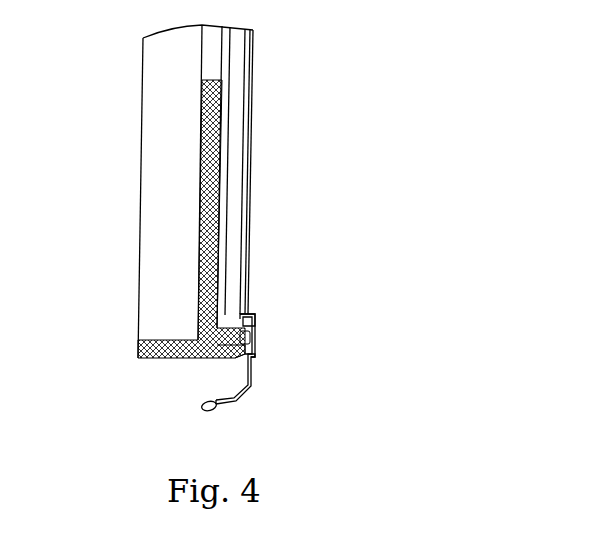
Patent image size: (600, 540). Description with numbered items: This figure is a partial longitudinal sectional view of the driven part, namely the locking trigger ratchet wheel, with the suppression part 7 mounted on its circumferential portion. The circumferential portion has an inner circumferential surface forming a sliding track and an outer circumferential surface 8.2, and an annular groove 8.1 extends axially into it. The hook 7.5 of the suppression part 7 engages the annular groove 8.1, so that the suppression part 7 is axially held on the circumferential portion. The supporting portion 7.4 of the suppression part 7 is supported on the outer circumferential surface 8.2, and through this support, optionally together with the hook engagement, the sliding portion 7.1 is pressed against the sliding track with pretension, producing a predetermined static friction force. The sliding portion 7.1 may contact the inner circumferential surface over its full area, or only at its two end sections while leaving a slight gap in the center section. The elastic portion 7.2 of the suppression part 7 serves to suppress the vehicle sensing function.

The suppression part 7 is at (256, 330).
The sliding portion 7.1 is at (243, 322).
The elastic portion 7.2 is at (212, 412).
The supporting portion 7.4 is at (247, 352).
The hook 7.5 is at (257, 336).
The annular groove 8.1 is at (255, 345).
The outer circumferential surface 8.2 is at (197, 330).